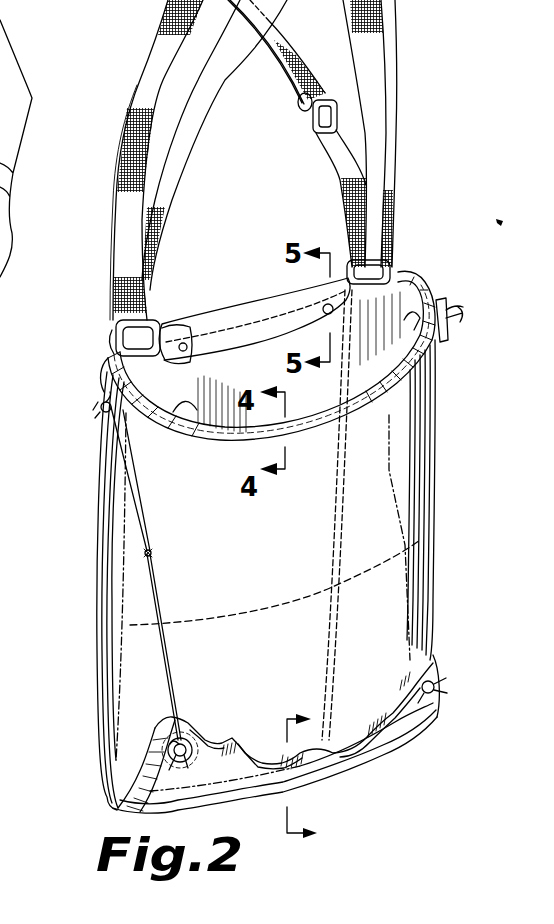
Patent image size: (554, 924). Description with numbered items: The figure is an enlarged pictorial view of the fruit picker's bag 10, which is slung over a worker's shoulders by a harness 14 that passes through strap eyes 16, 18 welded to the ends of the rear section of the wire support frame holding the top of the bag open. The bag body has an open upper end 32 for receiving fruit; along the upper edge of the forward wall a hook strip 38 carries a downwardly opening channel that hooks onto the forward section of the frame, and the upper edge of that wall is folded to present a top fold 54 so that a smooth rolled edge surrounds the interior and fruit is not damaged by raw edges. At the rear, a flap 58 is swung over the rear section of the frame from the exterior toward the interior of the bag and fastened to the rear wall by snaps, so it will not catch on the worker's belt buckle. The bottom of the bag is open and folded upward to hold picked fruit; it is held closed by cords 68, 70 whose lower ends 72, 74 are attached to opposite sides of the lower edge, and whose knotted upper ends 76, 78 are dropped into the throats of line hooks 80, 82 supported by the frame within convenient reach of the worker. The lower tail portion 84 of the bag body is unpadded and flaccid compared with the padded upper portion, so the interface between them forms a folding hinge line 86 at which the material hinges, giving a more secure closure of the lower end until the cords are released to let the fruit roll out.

The fruit picker's bag 10 is at (92, 474).
The harness 14 is at (162, 460).
The strap eye 16 is at (390, 262).
The strap eye 18 is at (113, 332).
The open upper end 32 is at (194, 364).
The hook strip 38 is at (352, 407).
The top fold 54 is at (412, 318).
The flap 58 is at (234, 325).
The cord 68 is at (444, 422).
The cord 70 is at (135, 515).
The lower end of cord 72 is at (438, 680).
The lower end of cord 74 is at (178, 728).
The knotted upper end of cord 76 is at (455, 302).
The knotted upper end of cord 78 is at (96, 412).
The line hook 80 is at (437, 303).
The line hook 82 is at (107, 387).
The tail portion 84 is at (383, 740).
The folding hinge line 86 is at (110, 802).